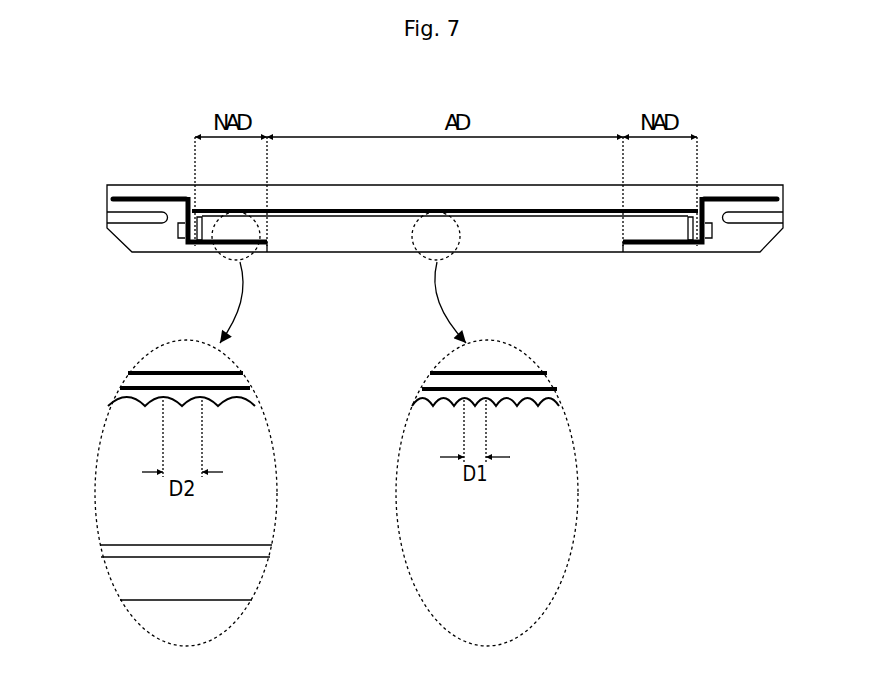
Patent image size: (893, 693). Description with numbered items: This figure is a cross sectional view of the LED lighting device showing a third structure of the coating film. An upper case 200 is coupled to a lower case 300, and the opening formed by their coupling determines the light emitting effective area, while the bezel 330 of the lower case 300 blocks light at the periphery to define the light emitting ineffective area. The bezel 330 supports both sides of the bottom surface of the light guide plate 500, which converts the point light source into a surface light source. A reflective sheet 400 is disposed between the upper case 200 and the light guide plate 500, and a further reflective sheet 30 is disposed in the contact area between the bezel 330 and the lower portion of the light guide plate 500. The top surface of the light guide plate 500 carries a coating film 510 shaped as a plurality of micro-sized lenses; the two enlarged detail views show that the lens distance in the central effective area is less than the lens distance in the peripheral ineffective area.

The upper case 200 is at (760, 192).
The lower case 300 is at (768, 237).
The bezel 330 is at (658, 248).
The reflective sheet 400 is at (522, 215).
The light guide plate 500 is at (582, 245).
The coating film 510 is at (117, 405).
The reflective sheet 30 is at (100, 549).